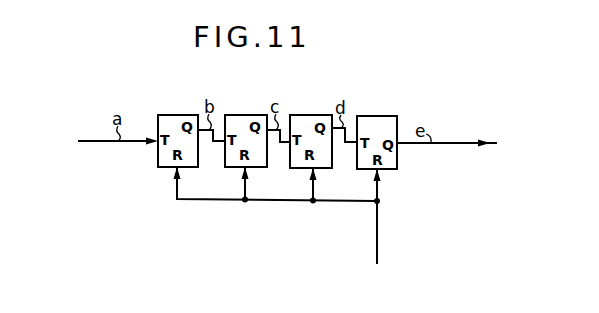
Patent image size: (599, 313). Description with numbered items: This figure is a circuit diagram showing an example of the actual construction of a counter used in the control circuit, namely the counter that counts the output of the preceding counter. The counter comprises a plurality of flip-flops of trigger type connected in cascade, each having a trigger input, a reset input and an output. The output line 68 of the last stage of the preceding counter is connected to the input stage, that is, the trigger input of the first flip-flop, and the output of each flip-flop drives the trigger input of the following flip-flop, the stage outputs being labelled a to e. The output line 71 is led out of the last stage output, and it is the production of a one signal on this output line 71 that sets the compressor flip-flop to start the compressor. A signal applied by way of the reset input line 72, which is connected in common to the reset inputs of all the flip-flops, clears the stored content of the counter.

The output line 68 is at (97, 141).
The output line 71 is at (462, 143).
The reset input line 72 is at (378, 250).